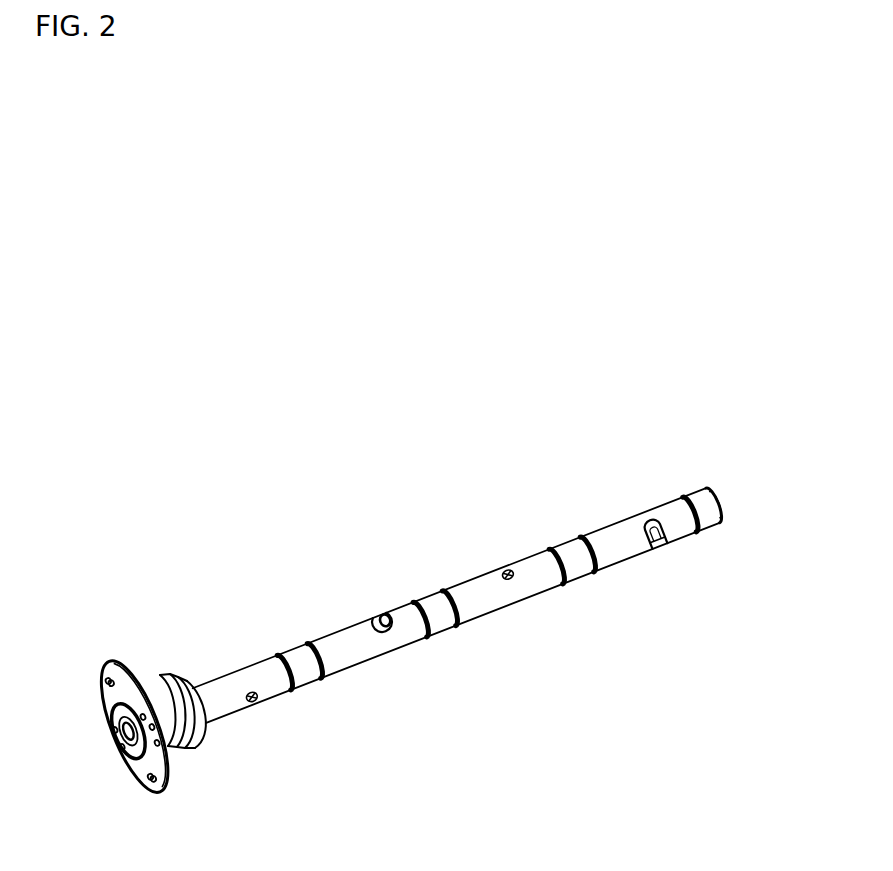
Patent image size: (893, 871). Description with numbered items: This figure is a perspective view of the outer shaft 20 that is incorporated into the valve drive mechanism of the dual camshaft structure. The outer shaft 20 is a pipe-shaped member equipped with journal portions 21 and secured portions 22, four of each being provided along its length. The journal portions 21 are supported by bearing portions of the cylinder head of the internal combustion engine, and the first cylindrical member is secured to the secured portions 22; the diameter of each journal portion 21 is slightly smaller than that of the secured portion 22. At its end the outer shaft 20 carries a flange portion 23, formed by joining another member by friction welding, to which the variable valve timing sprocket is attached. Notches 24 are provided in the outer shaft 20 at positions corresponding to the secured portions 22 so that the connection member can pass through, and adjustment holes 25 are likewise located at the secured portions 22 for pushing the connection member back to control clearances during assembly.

The outer shaft 20 is at (738, 563).
The journal portion 21 is at (298, 665).
The secured portion 22 is at (232, 686).
The flange portion 23 is at (140, 768).
The notch 24 is at (376, 612).
The adjustment hole 25 is at (251, 703).